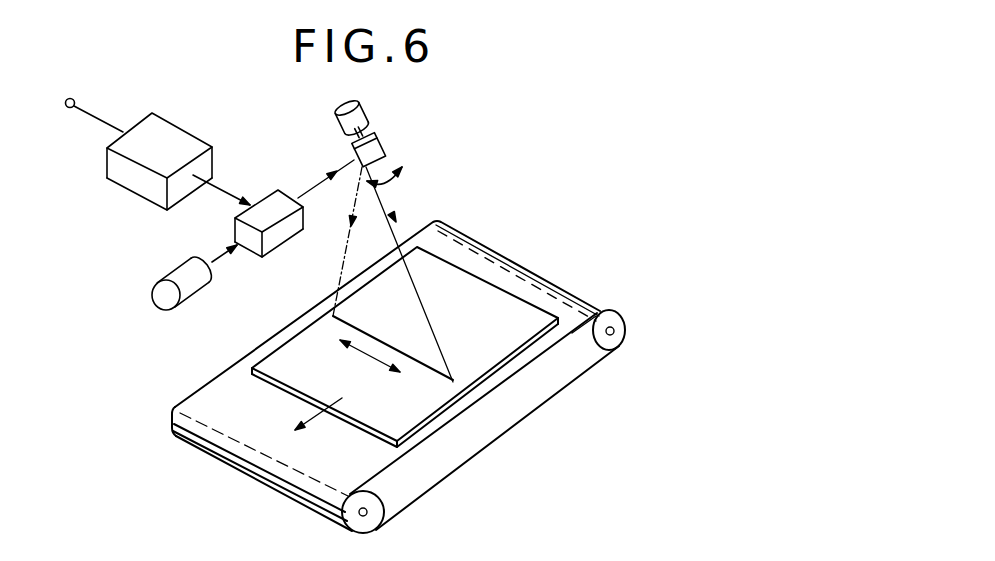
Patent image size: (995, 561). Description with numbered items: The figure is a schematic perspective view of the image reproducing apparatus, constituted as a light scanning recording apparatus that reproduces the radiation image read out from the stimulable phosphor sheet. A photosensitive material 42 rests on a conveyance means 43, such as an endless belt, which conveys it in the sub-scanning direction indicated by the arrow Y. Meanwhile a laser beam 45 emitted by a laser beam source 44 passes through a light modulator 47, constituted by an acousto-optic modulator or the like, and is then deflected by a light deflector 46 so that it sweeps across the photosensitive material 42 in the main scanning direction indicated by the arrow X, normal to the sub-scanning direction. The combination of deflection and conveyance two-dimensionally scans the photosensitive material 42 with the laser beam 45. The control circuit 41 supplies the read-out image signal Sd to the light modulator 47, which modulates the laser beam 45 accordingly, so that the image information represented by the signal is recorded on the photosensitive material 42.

The control circuit 41 is at (173, 146).
The photosensitive material 42 is at (423, 403).
The conveyance means 43 is at (370, 468).
The laser beam source 44 is at (169, 300).
The laser beam 45 is at (311, 186).
The light deflector 46 is at (391, 152).
The light modulator 47 is at (290, 237).